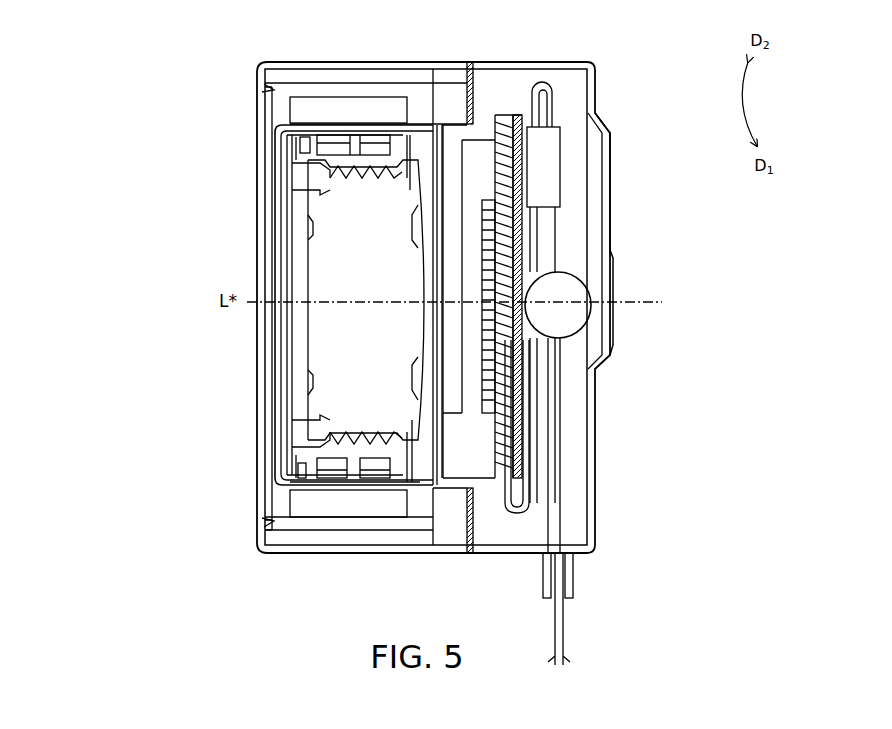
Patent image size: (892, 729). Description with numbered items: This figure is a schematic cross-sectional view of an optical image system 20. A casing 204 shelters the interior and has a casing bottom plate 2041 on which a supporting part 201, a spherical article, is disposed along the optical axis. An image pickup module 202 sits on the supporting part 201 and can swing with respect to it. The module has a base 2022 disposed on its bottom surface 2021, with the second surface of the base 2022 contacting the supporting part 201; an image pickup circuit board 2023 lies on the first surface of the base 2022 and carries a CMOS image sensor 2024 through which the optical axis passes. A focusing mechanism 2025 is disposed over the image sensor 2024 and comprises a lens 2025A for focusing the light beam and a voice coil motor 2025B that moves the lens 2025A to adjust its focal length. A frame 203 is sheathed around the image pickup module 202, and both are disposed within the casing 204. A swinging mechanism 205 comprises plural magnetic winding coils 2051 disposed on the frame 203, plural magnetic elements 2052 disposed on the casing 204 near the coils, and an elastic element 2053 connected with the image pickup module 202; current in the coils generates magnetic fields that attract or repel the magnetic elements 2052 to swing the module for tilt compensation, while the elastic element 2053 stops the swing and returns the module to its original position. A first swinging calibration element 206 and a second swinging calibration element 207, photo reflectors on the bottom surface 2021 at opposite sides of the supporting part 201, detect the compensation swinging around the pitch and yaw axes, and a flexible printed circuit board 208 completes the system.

The optical image system 20 is at (118, 93).
The supporting part 201 is at (567, 322).
The image pickup module 202 is at (297, 373).
The frame 203 is at (275, 472).
The casing 204 is at (265, 117).
The swinging mechanism 205 is at (270, 89).
The first swinging calibration element 206 is at (551, 150).
The second swinging calibration element 207 is at (601, 258).
The flexible printed circuit board 208 is at (557, 505).
The bottom surface 2021 is at (516, 413).
The base 2022 is at (500, 450).
The image pickup circuit board 2023 is at (515, 520).
The image sensor 2024 is at (490, 240).
The focusing mechanism 2025 is at (305, 188).
The lens 2025A is at (333, 258).
The voice coil motor 2025B is at (388, 168).
The casing bottom plate 2041 is at (610, 172).
The magnetic winding coils 2051 is at (347, 112).
The magnetic elements 2052 is at (288, 85).
The elastic element 2053 is at (474, 92).